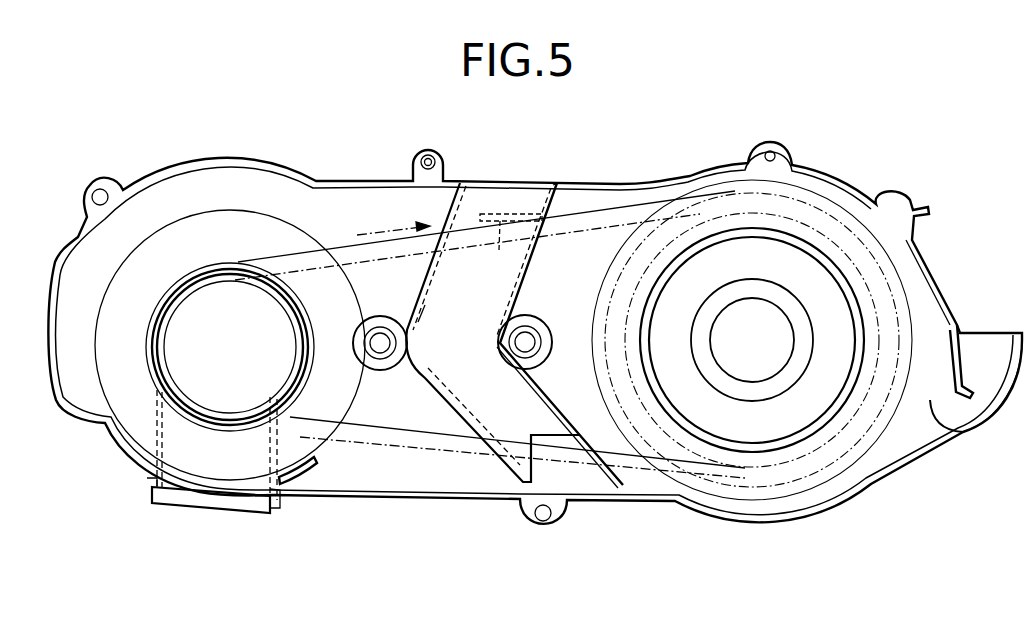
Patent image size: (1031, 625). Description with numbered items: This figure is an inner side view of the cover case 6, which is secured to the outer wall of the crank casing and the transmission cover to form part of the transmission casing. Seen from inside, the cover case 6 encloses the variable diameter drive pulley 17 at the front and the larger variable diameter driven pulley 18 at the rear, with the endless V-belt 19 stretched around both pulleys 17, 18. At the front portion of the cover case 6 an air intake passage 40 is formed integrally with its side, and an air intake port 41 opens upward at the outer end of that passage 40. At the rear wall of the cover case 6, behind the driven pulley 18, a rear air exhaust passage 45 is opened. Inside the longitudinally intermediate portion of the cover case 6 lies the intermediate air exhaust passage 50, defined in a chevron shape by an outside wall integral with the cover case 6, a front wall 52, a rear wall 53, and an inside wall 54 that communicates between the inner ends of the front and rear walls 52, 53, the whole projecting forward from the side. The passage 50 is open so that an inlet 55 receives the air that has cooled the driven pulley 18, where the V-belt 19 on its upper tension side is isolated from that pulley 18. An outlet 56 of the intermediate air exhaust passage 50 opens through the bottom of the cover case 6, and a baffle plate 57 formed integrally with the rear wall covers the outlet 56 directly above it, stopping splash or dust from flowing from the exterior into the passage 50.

The cover case 6 is at (628, 181).
The variable diameter drive pulley 17 is at (220, 211).
The driven pulley 18 is at (821, 196).
The endless V-belt 19 is at (347, 250).
The air intake passage 40 is at (258, 437).
The air intake port 41 is at (248, 518).
The rear air exhaust passage 45 is at (1010, 345).
The intermediate air exhaust passage 50 is at (470, 406).
The front wall 52 is at (440, 388).
The rear wall 53 is at (522, 397).
The inside wall 54 is at (430, 310).
The inlet 55 is at (531, 474).
The outlet 56 is at (554, 184).
The baffle plate 57 is at (511, 249).